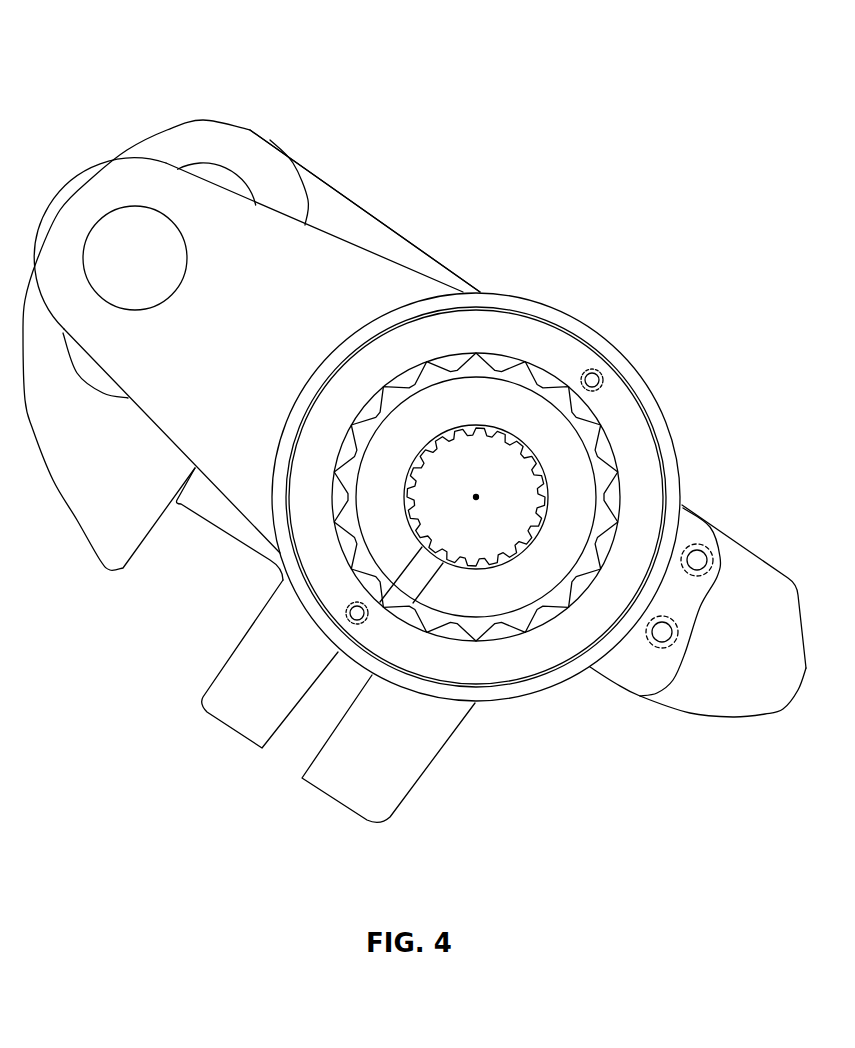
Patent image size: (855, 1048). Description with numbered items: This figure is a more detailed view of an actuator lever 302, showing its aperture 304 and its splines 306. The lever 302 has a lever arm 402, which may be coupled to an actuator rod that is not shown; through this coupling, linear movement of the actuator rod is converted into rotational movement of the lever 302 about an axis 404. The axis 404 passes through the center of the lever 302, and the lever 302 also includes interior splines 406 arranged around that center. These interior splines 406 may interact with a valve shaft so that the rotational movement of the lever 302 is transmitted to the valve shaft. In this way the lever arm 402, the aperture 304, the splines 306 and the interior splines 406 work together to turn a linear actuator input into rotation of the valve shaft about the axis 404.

The lever 302 is at (212, 54).
The aperture 304 is at (533, 418).
The splines 306 is at (612, 458).
The lever arm 402 is at (77, 200).
The axis 404 is at (476, 497).
The interior splines 406 is at (533, 450).